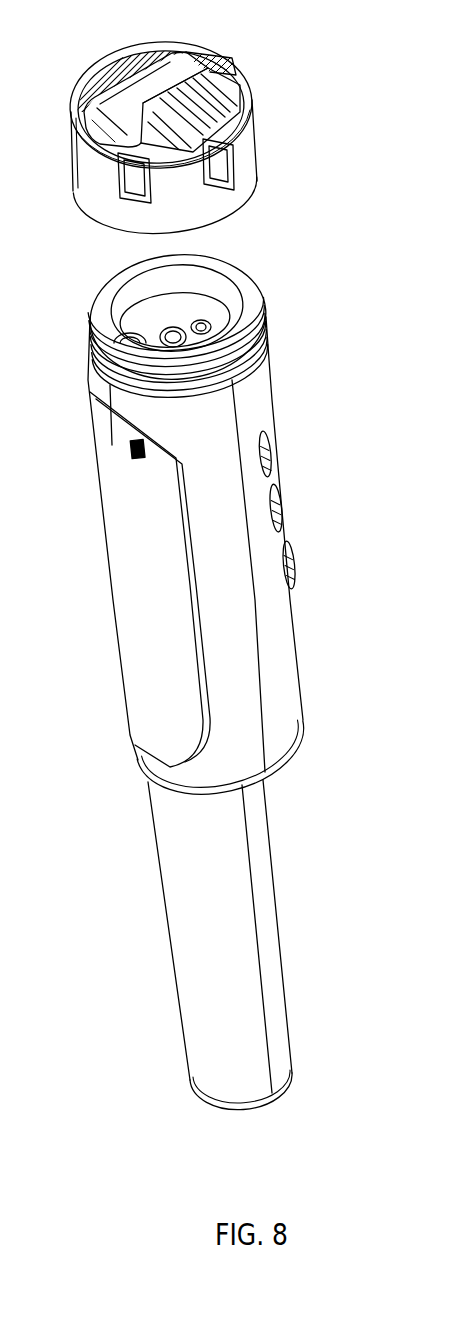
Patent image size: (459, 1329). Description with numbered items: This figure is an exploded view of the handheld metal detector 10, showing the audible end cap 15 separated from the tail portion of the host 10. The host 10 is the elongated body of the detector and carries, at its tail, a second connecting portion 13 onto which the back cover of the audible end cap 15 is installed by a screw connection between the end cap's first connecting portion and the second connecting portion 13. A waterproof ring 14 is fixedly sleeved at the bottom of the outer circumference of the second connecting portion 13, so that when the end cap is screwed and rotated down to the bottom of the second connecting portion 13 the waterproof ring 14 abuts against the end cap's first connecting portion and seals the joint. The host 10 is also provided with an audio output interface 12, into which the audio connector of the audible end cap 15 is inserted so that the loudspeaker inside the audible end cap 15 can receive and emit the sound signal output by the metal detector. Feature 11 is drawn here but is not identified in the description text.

The host 10 is at (228, 507).
The opening 11 is at (230, 285).
The audio output interface 12 is at (173, 340).
The second connecting portion 13 is at (90, 350).
The waterproof ring 14 is at (243, 360).
The audible end cap 15 is at (197, 173).